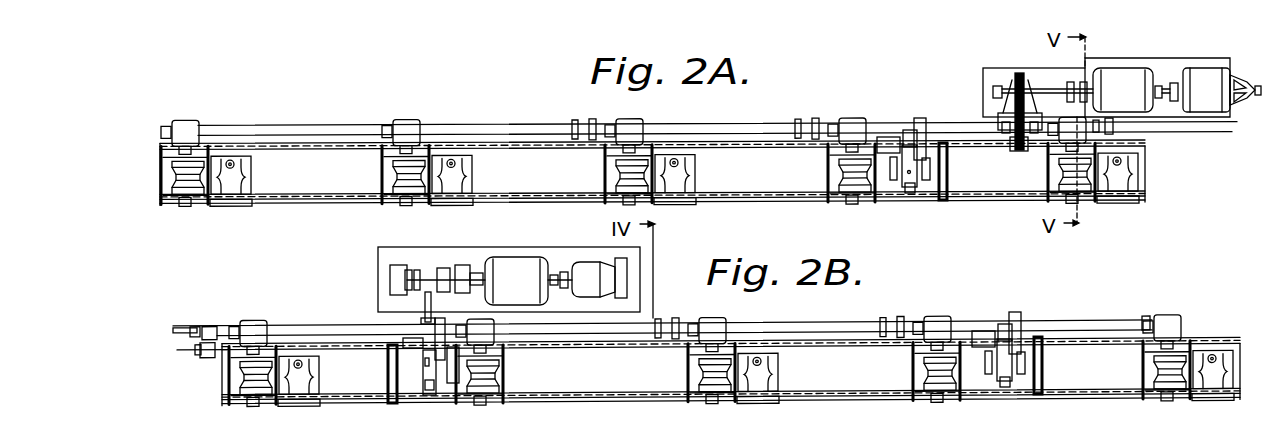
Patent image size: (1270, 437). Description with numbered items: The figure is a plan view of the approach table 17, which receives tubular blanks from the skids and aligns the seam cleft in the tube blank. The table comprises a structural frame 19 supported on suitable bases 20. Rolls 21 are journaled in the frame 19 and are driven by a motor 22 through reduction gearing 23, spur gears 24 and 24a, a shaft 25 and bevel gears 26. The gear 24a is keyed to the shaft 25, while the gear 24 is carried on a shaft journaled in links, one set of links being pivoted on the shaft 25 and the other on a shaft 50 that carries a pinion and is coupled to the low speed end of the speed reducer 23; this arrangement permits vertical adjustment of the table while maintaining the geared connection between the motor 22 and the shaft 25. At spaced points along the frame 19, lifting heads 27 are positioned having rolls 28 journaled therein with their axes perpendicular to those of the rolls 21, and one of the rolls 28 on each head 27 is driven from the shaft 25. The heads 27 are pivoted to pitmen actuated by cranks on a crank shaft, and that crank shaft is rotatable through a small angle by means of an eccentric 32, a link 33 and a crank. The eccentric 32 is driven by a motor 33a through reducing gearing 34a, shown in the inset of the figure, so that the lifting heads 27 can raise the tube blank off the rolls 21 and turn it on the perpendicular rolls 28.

In FIG. 2B, the approach table 17 is at (1080, 400).
In FIG. 2A, the structural frame 19 is at (757, 158).
In FIG. 2B, the structural frame 19 is at (820, 396).
In FIG. 2A, the bases 20 is at (249, 178).
In FIG. 2B, the bases 20 is at (318, 388).
In FIG. 2A, the rolls 21 is at (172, 183).
In FIG. 2B, the rolls 21 is at (238, 389).
In FIG. 2A, the motor 22 is at (1207, 77).
In FIG. 2A, the reduction gearing 23 is at (1125, 75).
In FIG. 2A, the spur gear 24 is at (1018, 74).
In FIG. 2A, the spur gear 24a is at (1010, 143).
In FIG. 2A, the shaft 25 is at (957, 117).
In FIG. 2B, the shaft 25 is at (838, 328).
In FIG. 2A, the bevel gears 26 is at (851, 124).
In FIG. 2A, the lifting heads 27 is at (909, 178).
In FIG. 2B, the lifting heads 27 is at (421, 381).
In FIG. 2A, the rolls 28 is at (918, 191).
In FIG. 2B, the rolls 28 is at (437, 399).
In FIG. 2B, the eccentric 32 is at (427, 270).
In FIG. 2B, the link 33 is at (424, 322).
In FIG. 2B, the motor 33a is at (600, 243).
In FIG. 2B, the reducing gearing 34a is at (515, 267).
In FIG. 2A, the shaft 50 is at (1047, 88).